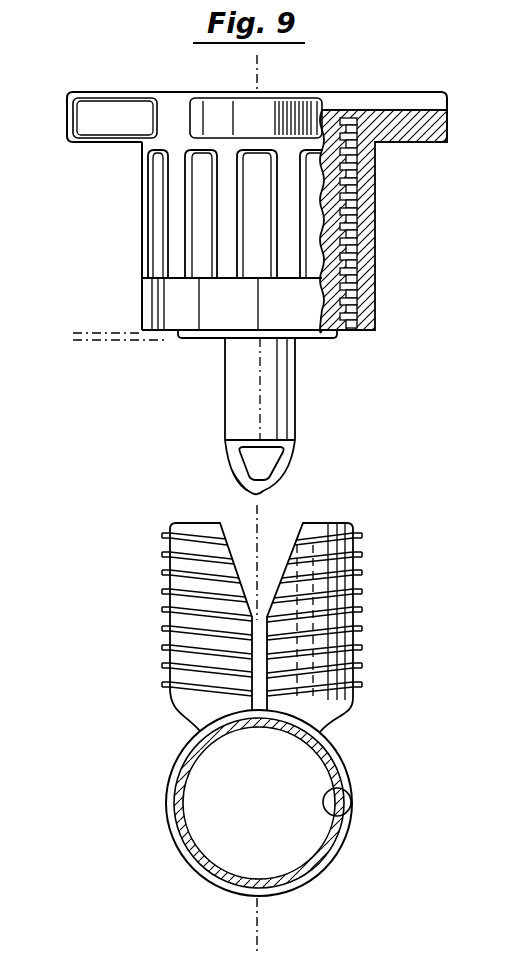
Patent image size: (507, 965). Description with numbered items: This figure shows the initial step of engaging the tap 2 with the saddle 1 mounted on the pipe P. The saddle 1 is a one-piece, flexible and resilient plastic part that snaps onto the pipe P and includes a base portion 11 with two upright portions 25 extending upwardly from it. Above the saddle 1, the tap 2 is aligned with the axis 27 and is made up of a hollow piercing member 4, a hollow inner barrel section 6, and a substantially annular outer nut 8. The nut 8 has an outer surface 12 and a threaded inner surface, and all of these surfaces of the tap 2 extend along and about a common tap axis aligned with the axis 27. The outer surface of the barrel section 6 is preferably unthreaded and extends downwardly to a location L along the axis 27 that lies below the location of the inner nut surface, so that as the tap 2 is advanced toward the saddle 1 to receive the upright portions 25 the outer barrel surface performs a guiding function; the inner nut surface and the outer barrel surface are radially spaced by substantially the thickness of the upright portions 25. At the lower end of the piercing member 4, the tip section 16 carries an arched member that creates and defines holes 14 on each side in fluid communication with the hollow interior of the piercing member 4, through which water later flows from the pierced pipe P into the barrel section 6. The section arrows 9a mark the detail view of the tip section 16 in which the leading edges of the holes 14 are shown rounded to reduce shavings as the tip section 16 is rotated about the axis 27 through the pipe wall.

The saddle 1 is at (165, 713).
The tap 2 is at (120, 203).
The piercing member 4 is at (300, 377).
The barrel section 6 is at (193, 345).
The nut 8 is at (140, 242).
The section line 9a is at (204, 425).
The base portion 11 is at (178, 853).
The outer surface 12 is at (377, 212).
The holes 14 is at (253, 457).
The tip section 16 is at (283, 488).
The upright portions 25 is at (163, 608).
The axis 27 is at (257, 935).
The location L is at (113, 342).
The pipe P is at (350, 789).